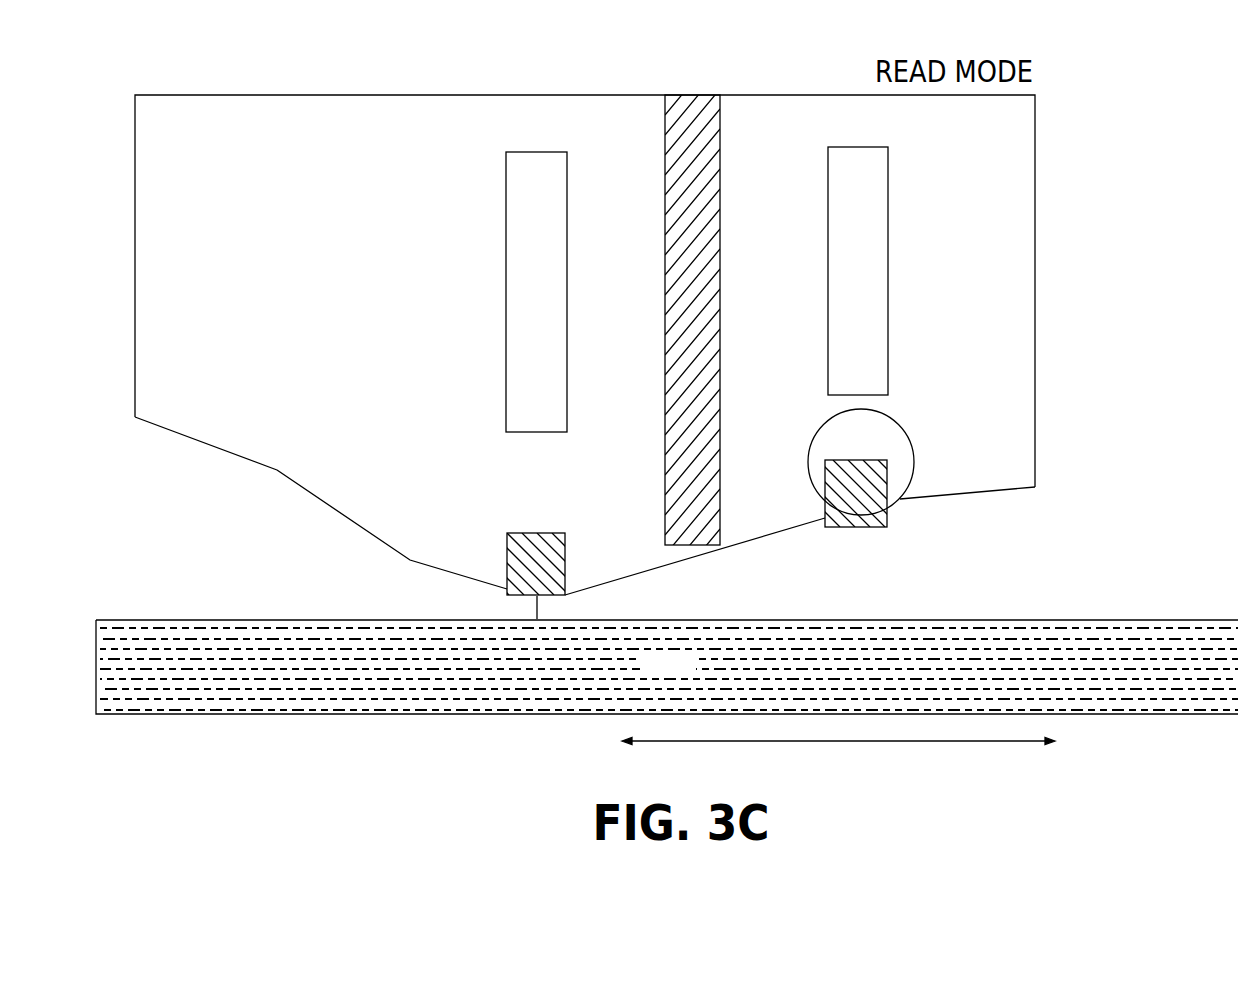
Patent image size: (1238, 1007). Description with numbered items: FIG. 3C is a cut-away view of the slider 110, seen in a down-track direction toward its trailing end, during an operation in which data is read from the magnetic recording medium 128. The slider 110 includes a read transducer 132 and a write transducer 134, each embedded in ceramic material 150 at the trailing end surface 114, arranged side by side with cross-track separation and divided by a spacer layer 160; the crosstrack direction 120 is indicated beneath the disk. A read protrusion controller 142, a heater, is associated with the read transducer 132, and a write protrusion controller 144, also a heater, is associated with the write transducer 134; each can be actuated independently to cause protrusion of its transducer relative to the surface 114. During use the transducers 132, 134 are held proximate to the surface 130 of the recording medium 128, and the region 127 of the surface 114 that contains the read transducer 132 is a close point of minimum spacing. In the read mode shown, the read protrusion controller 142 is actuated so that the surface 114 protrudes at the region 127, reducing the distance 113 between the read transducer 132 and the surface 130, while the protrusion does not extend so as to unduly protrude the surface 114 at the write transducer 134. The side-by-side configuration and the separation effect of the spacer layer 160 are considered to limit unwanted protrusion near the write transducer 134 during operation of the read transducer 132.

The slider 110 is at (635, 291).
The distance 113 is at (517, 609).
The surface 114 is at (186, 437).
The crosstrack direction 120 is at (707, 749).
The region 127 is at (322, 517).
The magnetic recording medium 128 is at (667, 662).
The surface 130 is at (1035, 619).
The read transducer 132 is at (543, 563).
The write transducer 134 is at (858, 528).
The read protrusion controller 142 is at (537, 167).
The write protrusion controller 144 is at (843, 180).
The ceramic material 150 is at (285, 347).
The spacer layer 160 is at (716, 130).